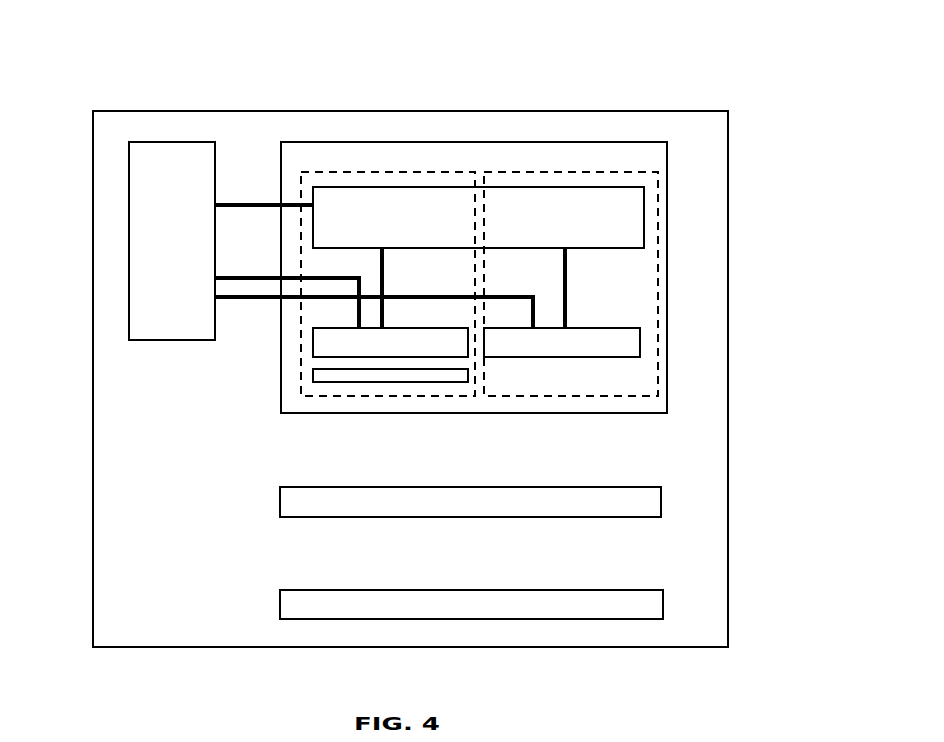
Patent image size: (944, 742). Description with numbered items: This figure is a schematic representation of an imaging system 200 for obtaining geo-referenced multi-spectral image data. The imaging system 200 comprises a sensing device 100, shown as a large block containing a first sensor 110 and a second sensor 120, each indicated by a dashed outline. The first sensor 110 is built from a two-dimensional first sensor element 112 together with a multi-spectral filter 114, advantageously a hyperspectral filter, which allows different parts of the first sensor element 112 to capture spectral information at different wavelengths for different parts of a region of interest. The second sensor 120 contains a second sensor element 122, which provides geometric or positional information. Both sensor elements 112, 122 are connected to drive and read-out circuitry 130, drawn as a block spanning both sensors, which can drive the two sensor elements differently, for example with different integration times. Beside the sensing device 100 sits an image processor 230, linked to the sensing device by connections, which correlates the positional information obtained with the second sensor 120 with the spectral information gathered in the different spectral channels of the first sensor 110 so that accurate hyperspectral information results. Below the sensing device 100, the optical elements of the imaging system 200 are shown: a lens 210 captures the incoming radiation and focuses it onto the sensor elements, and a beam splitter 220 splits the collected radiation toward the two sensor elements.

The imaging system 200 is at (88, 80).
The image processor 230 is at (129, 205).
The sensing device 100 is at (667, 187).
The first sensor 110 is at (301, 349).
The first sensor element 112 is at (313, 357).
The multi-spectral filter 114 is at (313, 382).
The second sensor 120 is at (658, 377).
The second sensor element 122 is at (640, 338).
The drive and read-out circuitry 130 is at (644, 222).
The beam splitter 220 is at (280, 495).
The lens 210 is at (280, 603).